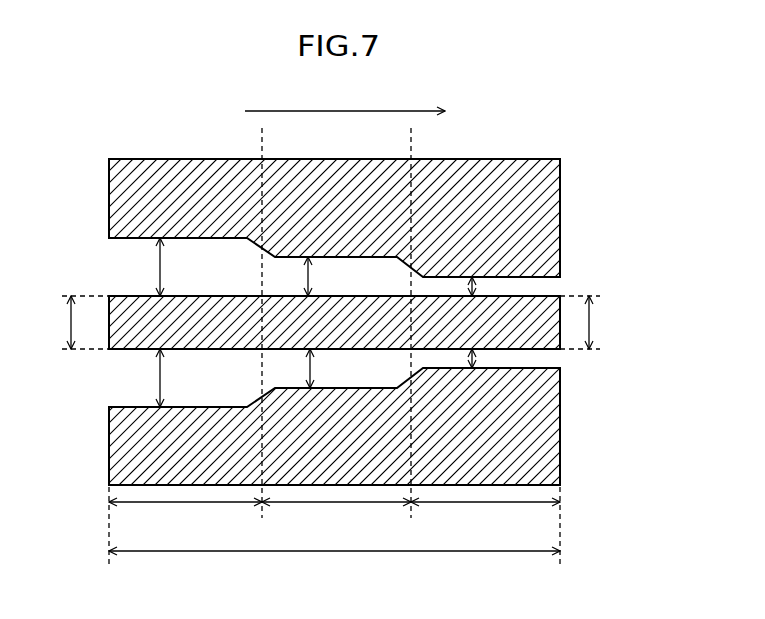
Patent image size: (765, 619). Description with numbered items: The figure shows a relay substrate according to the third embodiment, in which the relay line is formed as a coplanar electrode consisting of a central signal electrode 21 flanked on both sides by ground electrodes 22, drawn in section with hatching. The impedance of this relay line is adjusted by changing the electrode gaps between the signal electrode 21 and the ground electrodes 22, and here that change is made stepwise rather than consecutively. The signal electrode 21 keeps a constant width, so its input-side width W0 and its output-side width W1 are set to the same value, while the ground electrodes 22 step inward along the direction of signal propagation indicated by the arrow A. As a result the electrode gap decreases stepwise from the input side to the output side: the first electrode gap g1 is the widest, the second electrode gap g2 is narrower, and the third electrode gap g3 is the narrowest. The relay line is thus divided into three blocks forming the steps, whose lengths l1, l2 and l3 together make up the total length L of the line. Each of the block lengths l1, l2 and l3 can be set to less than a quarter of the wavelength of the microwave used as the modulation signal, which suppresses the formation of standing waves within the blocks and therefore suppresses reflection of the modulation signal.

The signal electrode 21 is at (135, 323).
The ground electrodes 22 is at (490, 210).
The signal propagation direction A is at (359, 112).
The total length L is at (334, 569).
The length of the first block l1 is at (185, 519).
The length of the second block l2 is at (336, 519).
The length of the third block l3 is at (485, 519).
The input-side width W0 is at (67, 322).
The output-side width W1 is at (594, 322).
The first electrode gap g1 is at (176, 322).
The second electrode gap g2 is at (324, 322).
The third electrode gap g3 is at (488, 322).